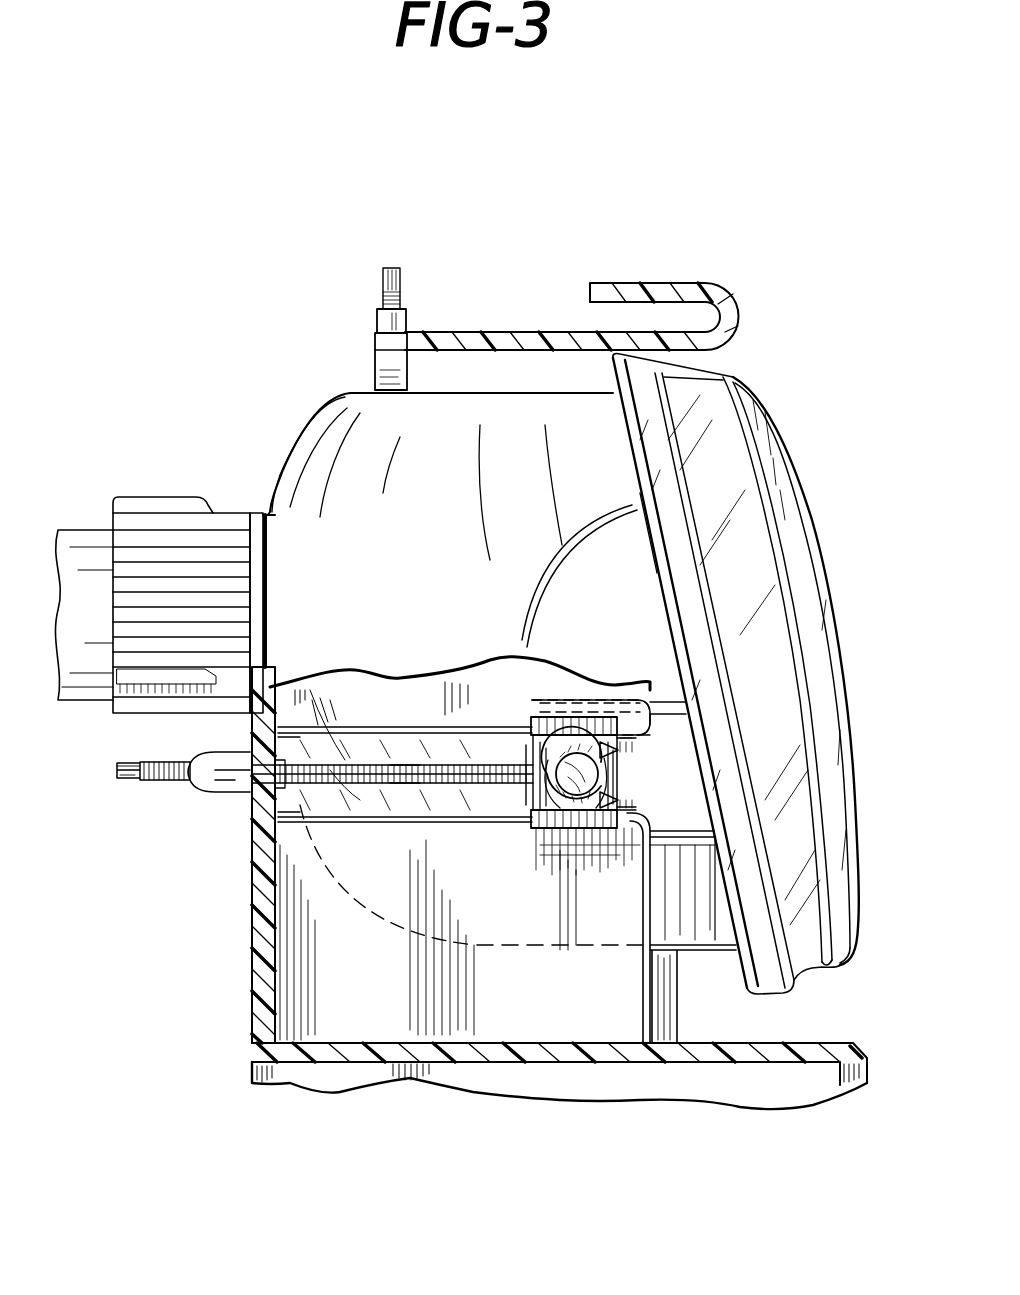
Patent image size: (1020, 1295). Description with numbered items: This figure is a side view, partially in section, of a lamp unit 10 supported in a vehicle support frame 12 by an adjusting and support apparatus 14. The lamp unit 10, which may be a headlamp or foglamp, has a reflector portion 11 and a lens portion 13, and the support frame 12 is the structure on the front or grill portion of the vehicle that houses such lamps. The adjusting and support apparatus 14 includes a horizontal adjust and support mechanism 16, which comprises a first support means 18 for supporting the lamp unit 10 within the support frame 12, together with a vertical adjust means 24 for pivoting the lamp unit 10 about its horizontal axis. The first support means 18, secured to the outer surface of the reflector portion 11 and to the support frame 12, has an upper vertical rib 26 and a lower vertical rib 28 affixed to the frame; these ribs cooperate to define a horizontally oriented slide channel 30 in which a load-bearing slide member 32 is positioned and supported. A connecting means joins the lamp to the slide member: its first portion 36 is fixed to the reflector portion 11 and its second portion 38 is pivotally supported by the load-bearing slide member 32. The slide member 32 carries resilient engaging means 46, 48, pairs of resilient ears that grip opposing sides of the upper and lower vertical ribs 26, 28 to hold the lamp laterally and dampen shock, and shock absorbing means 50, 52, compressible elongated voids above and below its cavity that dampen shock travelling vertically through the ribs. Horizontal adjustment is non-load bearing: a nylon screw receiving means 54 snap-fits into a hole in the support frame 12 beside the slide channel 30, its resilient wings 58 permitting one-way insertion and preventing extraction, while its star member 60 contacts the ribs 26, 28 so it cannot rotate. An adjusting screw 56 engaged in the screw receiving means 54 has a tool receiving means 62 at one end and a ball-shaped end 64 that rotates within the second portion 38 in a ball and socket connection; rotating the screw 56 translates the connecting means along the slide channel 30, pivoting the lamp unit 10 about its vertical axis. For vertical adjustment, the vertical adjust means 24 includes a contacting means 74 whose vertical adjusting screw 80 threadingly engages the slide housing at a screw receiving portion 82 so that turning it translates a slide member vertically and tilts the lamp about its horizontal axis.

The lamp unit 10 is at (785, 382).
The reflector portion 11 is at (635, 590).
The support frame 12 is at (515, 330).
The lens portion 13 is at (782, 467).
The adjusting and support apparatus 14 is at (232, 248).
The horizontal adjust and support mechanism 16 is at (208, 940).
The first support means 18 is at (687, 918).
The vertical adjust means 24 is at (486, 254).
The upper vertical rib 26 is at (360, 693).
The lower vertical rib 28 is at (534, 921).
The horizontally oriented slide channel 30 is at (300, 830).
The load-bearing slide member 32 is at (514, 710).
The first portion 36 is at (614, 797).
The second portion 38 is at (577, 773).
The means for resiliently engaging upper vertical rib 46 is at (600, 740).
The means for resiliently engaging lower vertical rib 48 is at (568, 826).
The shock absorbing means 50 is at (612, 745).
The shock absorbing means 52 is at (613, 830).
The screw receiving means 54 is at (207, 797).
The adjusting screw 56 is at (403, 772).
The resilient wings 58 is at (247, 778).
The star member 60 is at (282, 733).
The tool receiving means 62 is at (133, 778).
The end of adjusting screw 64 is at (514, 757).
The contacting means 74 is at (338, 340).
The vertical adjusting screw 80 is at (403, 295).
The screw receiving portion 82 is at (380, 323).